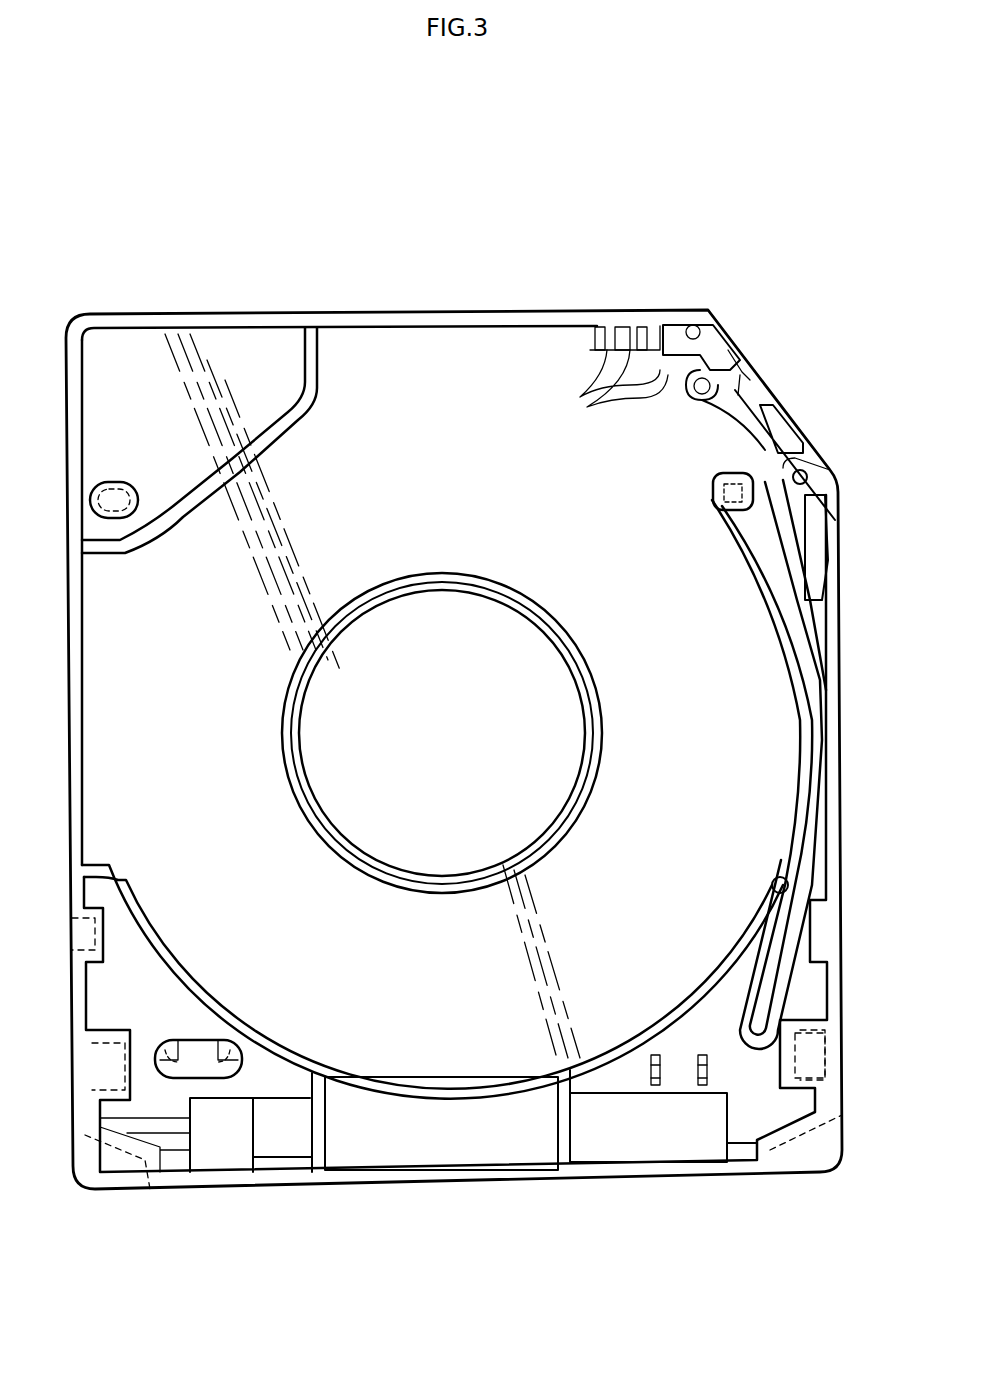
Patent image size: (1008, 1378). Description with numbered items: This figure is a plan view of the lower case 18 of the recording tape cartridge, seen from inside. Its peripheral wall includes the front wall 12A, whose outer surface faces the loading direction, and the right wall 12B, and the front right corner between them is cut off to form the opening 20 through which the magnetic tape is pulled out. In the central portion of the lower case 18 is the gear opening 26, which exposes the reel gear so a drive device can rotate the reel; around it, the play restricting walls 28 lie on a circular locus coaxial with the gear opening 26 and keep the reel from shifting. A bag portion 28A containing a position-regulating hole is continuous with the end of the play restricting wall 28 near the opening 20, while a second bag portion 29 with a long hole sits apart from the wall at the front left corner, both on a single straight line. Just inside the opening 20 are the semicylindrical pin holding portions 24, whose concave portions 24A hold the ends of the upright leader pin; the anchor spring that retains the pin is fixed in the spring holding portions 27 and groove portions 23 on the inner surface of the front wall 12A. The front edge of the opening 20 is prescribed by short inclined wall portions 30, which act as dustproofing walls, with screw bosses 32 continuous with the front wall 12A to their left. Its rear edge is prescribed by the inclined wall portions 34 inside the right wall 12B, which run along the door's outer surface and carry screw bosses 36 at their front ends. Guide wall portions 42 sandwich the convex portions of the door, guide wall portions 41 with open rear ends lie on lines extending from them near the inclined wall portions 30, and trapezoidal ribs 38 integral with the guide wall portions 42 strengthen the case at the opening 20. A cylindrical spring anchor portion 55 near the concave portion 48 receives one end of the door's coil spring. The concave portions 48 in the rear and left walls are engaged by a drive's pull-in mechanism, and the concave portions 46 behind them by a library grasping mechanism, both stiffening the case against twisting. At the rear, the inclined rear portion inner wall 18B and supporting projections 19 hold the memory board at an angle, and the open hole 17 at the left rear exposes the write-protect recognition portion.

The lower case 18 is at (484, 214).
The front wall 12A is at (370, 312).
The right wall 12B is at (840, 712).
The groove portions 23 is at (645, 340).
The screw bosses 32 is at (693, 324).
The inclined wall portions 30 is at (725, 345).
The guide wall portions 41 is at (740, 358).
The opening 20 is at (775, 388).
The ribs 38 is at (790, 420).
The screw bosses 36 is at (808, 477).
The spring holding portions 27 is at (580, 396).
The pin holding portions 24 is at (690, 388).
The concave portions 24A is at (718, 395).
The bag portion 28A is at (712, 485).
The bag portion 29 is at (108, 482).
The play restricting walls 28 is at (178, 503).
The gear opening 26 is at (404, 600).
The inclined wall portions 34 is at (800, 555).
The spring anchor portion 55 is at (772, 882).
The guide wall portions 42 is at (760, 975).
The concave portion 48 is at (88, 935).
The concave portion 46 is at (120, 1072).
The open hole 17 is at (203, 1045).
The supporting projections 19 is at (702, 1055).
The rear portion inner wall 18B is at (622, 1150).